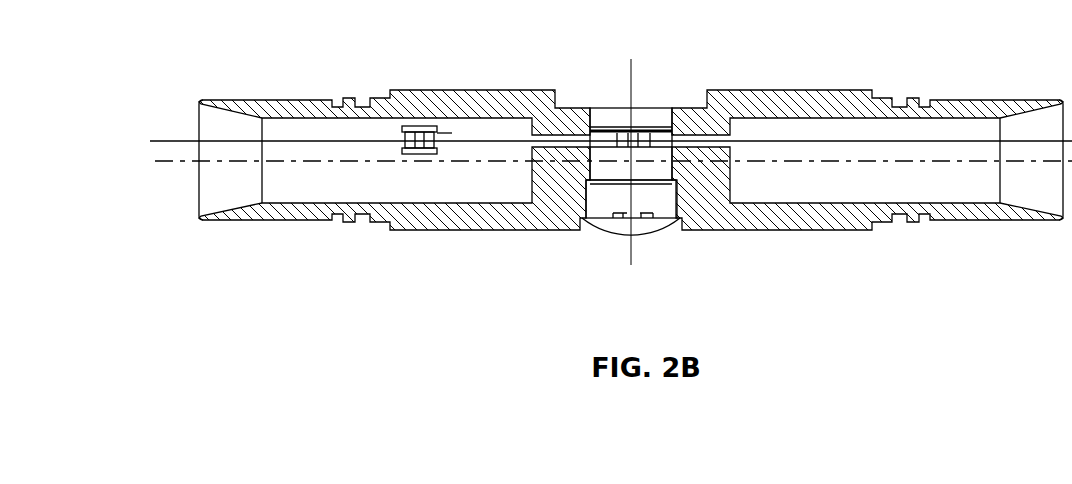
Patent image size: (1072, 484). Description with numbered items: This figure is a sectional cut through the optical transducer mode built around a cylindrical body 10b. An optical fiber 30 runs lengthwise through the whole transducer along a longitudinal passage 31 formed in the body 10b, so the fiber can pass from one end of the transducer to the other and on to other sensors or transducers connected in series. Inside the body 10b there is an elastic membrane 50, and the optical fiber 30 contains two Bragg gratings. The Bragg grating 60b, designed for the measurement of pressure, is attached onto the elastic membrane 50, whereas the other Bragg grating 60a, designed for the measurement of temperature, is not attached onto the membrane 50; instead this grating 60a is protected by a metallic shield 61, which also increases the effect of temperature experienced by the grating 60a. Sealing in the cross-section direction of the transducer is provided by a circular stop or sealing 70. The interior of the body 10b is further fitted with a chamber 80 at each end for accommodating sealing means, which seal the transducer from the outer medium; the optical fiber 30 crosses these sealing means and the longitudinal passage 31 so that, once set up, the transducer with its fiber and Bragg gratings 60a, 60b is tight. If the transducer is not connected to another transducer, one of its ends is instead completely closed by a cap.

The cylindrical body 10b is at (814, 96).
The optical fiber 30 is at (298, 140).
The longitudinal passage 31 is at (715, 128).
The elastic membrane 50 is at (607, 130).
The Bragg grating 60a is at (452, 133).
The Bragg grating 60b is at (647, 130).
The metallic shield 61 is at (419, 126).
The circular stop or sealing 70 is at (653, 210).
The chamber 80 is at (460, 190).